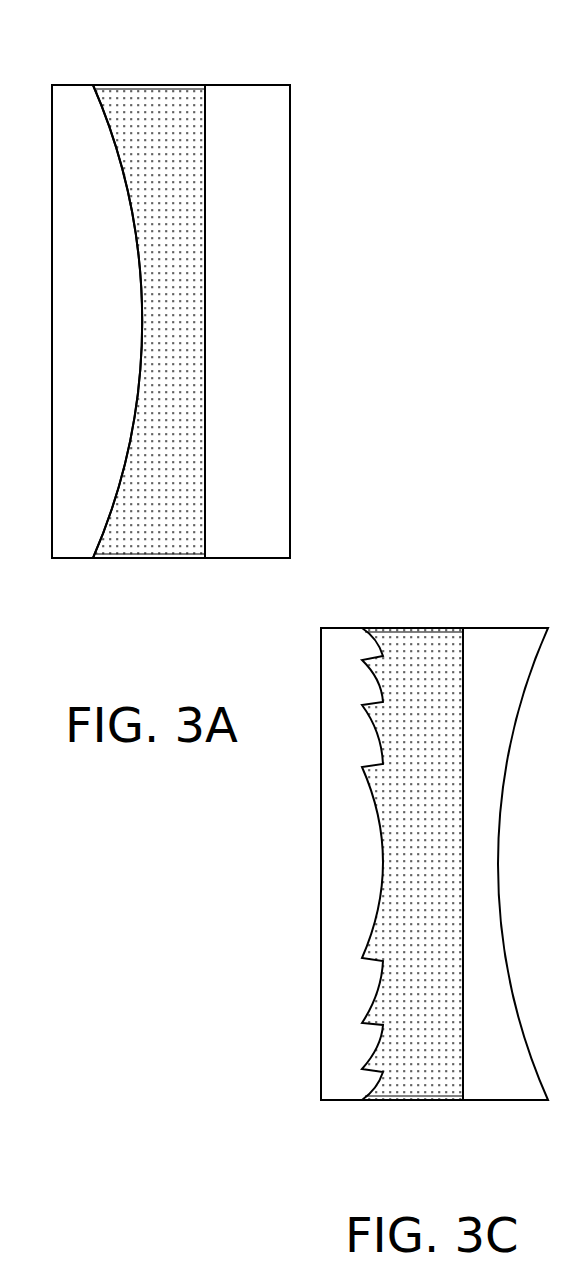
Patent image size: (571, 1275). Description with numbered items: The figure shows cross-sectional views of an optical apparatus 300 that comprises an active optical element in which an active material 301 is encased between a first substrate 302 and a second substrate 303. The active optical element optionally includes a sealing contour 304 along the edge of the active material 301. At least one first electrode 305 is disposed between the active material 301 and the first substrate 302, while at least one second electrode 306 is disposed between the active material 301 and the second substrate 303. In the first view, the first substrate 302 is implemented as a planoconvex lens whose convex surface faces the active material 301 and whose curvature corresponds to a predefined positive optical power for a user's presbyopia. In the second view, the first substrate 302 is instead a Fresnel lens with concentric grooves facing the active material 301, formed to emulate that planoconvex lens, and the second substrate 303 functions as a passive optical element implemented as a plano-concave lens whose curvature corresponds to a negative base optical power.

In FIG. 3A, the optical apparatus 300 is at (333, 487).
In FIG. 3A, the active material 301 is at (175, 517).
In FIG. 3C, the active material 301 is at (432, 1057).
In FIG. 3A, the first substrate 302 is at (78, 538).
In FIG. 3C, the first substrate 302 is at (332, 1082).
In FIG. 3A, the second substrate 303 is at (262, 538).
In FIG. 3C, the second substrate 303 is at (517, 1082).
In FIG. 3A, the sealing contour 304 is at (152, 88).
In FIG. 3A, the first electrode 305 is at (140, 263).
In FIG. 3A, the second electrode 306 is at (570, 307).